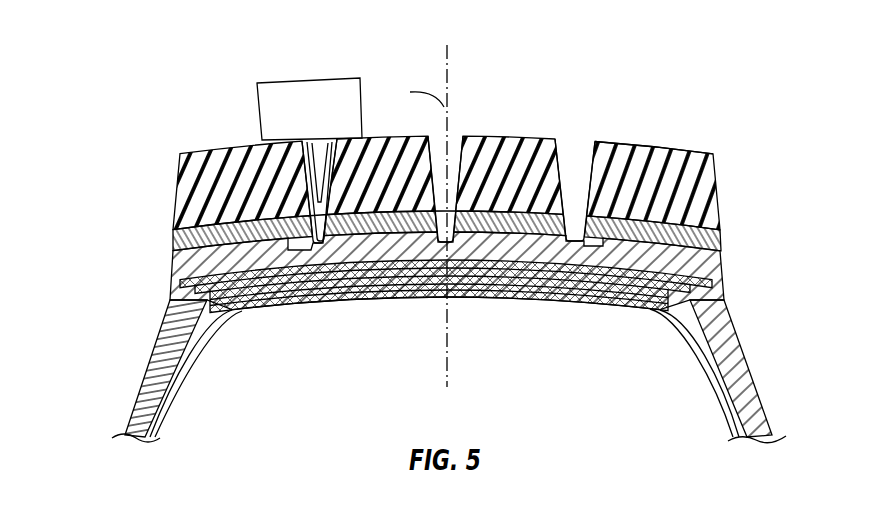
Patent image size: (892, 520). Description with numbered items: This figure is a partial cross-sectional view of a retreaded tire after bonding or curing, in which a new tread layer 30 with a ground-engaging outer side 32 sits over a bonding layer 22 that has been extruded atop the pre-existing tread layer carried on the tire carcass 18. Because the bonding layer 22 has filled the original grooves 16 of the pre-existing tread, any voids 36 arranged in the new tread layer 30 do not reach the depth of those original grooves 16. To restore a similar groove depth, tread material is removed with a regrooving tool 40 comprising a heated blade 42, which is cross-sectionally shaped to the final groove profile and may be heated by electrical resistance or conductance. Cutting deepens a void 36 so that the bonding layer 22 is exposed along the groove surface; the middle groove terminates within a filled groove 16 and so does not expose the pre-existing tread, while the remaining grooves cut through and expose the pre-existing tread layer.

The voids 16 is at (288, 243).
The tire carcass 18 is at (758, 400).
The bonding layer 22 is at (511, 246).
The new tread layer 30 is at (677, 170).
The outer side 32 is at (632, 142).
The voids 36 is at (332, 143).
The regrooving tool 40 is at (316, 80).
The heated blade 42 is at (325, 140).